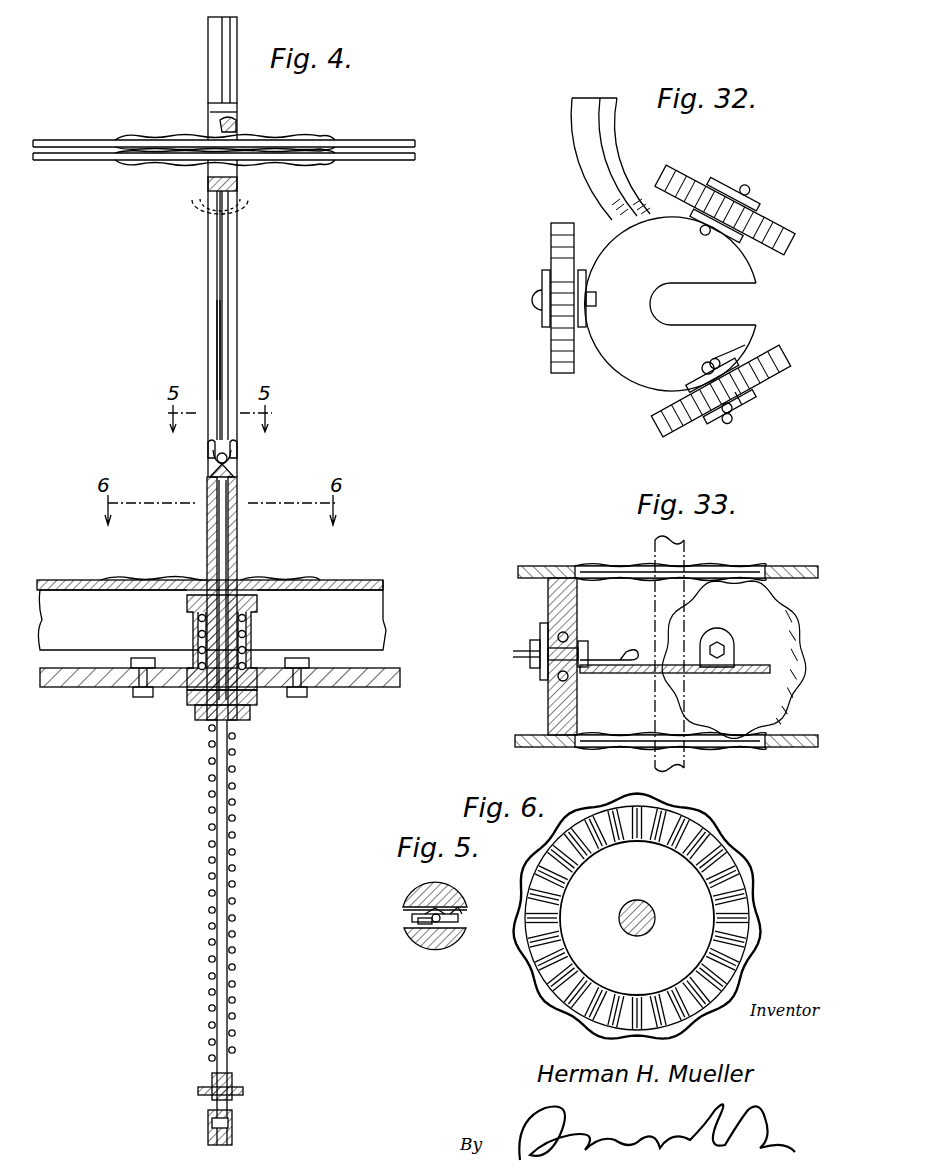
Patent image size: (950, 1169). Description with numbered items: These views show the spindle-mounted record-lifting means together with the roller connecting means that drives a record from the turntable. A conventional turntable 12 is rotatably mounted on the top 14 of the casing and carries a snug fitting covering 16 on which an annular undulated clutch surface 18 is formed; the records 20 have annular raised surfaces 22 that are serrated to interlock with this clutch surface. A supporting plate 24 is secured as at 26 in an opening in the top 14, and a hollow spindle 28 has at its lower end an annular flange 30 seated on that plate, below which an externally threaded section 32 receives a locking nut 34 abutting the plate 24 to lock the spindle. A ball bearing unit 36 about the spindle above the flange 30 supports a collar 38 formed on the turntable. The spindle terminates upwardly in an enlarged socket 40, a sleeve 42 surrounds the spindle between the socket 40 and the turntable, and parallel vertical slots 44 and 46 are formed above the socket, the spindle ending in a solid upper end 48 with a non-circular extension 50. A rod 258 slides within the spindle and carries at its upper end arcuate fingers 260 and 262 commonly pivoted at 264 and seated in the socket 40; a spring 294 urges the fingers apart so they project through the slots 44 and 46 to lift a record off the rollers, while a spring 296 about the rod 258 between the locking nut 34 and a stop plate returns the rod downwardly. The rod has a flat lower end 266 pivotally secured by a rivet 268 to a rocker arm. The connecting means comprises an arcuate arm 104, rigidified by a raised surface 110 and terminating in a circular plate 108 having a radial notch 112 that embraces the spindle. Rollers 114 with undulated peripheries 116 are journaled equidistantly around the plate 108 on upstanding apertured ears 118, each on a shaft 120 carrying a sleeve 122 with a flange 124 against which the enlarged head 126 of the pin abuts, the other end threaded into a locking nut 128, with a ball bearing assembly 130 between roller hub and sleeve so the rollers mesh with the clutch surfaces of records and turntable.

In FIG. 4, the non-circular axially aligned extension 50 is at (215, 61).
In FIG. 4, the solid upper end 48 is at (239, 126).
In FIG. 4, the annular raised surfaces 22 is at (303, 137).
In FIG. 33, the annular raised surfaces 22 is at (737, 566).
In FIG. 4, the records 20 is at (356, 134).
In FIG. 33, the records 20 is at (810, 566).
In FIG. 4, the arcuate finger 260 is at (248, 206).
In FIG. 5, the arcuate finger 260 is at (466, 926).
In FIG. 4, the slot or guideway 46 is at (214, 345).
In FIG. 5, the slot or guideway 46 is at (409, 920).
In FIG. 4, the slot or guideway 44 is at (230, 346).
In FIG. 5, the slot or guideway 44 is at (465, 915).
In FIG. 4, the spring 294 is at (212, 451).
In FIG. 5, the spring 294 is at (436, 945).
In FIG. 4, the arcuate finger 262 is at (210, 458).
In FIG. 5, the arcuate finger 262 is at (416, 932).
In FIG. 4, the enlarged socket 40 is at (234, 470).
In FIG. 4, the pivot 264 is at (214, 474).
In FIG. 5, the pivot 264 is at (458, 902).
In FIG. 4, the sleeve 42 is at (238, 502).
In FIG. 4, the hollow spindle 28 is at (234, 545).
In FIG. 5, the hollow spindle 28 is at (413, 894).
In FIG. 4, the annular undulated clutch surface 18 is at (305, 580).
In FIG. 6, the annular undulated clutch surface 18 is at (716, 860).
In FIG. 4, the covering 16 is at (362, 582).
In FIG. 6, the covering 16 is at (692, 917).
In FIG. 4, the turntable 12 is at (384, 610).
In FIG. 4, the top of the casing 14 is at (362, 690).
In FIG. 4, the collar 38 is at (258, 607).
In FIG. 4, the ball bearing unit 36 is at (250, 647).
In FIG. 4, the securing means 26 is at (302, 699).
In FIG. 4, the supporting plate 24 is at (255, 703).
In FIG. 4, the locking nut 34 is at (193, 712).
In FIG. 4, the externally threaded section 32 is at (212, 722).
In FIG. 4, the annular laterally extending flange 30 is at (236, 722).
In FIG. 4, the rod 258 is at (221, 864).
In FIG. 4, the spring 296 is at (236, 968).
In FIG. 4, the flat lower end 266 is at (233, 1100).
In FIG. 4, the rivet 268 is at (208, 1125).
In FIG. 32, the arcuate arm 104 is at (609, 98).
In FIG. 32, the raised surface 110 is at (603, 156).
In FIG. 32, the undulated peripheries 116 is at (745, 200).
In FIG. 32, the circular plate 108 is at (670, 304).
In FIG. 33, the circular plate 108 is at (623, 674).
In FIG. 32, the notch or cut-out section 112 is at (675, 283).
In FIG. 32, the upstanding apertured ears 118 is at (587, 320).
In FIG. 33, the upstanding apertured ears 118 is at (727, 648).
In FIG. 32, the shaft or pin 120 is at (708, 362).
In FIG. 33, the shaft or pin 120 is at (538, 664).
In FIG. 32, the locking nut 128 is at (742, 352).
In FIG. 33, the locking nut 128 is at (590, 657).
In FIG. 32, the flange 124 is at (744, 398).
In FIG. 33, the flange 124 is at (540, 628).
In FIG. 32, the enlarged head 126 is at (728, 414).
In FIG. 33, the enlarged head 126 is at (536, 652).
In FIG. 33, the rollers 114 is at (566, 616).
In FIG. 33, the ball bearing assembly 130 is at (570, 636).
In FIG. 33, the sleeve 122 is at (546, 682).